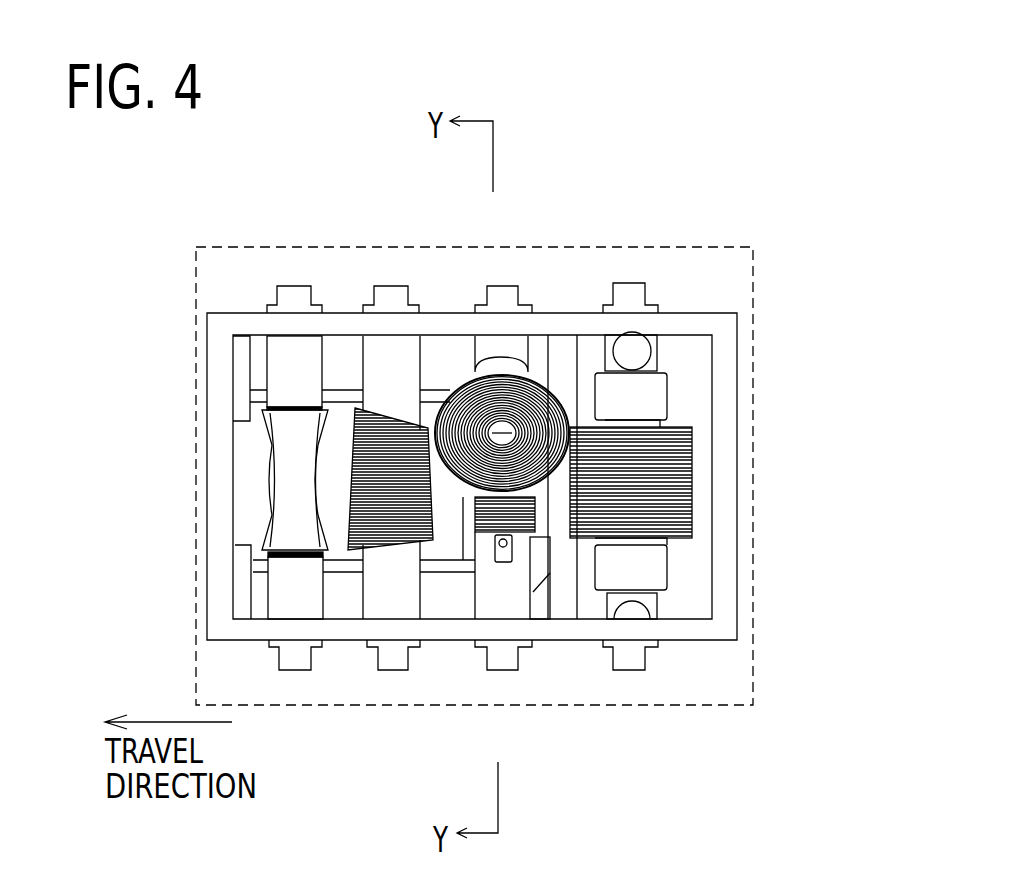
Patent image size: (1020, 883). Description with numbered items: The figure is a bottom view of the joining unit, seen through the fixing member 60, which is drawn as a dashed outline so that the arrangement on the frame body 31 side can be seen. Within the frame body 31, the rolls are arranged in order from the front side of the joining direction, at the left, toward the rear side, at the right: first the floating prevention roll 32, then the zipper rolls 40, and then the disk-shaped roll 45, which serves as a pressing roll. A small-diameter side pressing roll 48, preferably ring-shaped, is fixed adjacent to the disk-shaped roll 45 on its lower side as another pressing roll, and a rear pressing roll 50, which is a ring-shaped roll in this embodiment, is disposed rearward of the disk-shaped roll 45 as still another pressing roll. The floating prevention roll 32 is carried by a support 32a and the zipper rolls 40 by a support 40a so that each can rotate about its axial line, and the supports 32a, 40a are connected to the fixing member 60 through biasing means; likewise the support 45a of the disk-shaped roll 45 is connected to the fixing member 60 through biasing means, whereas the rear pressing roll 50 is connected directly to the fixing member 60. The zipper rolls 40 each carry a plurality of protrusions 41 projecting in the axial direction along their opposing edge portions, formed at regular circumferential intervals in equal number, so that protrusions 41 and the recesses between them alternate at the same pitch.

The frame body 31 is at (243, 327).
The floating prevention roll 32 is at (292, 440).
The support 32a is at (296, 612).
The zipper rolls 40 is at (360, 482).
The support 40a is at (400, 375).
The protrusions 41 is at (357, 481).
The disk-shaped roll 45 is at (462, 490).
The support 45a is at (520, 363).
The small-diameter side pressing roll 48 is at (533, 528).
The rear pressing roll 50 is at (700, 481).
The fixing member 60 is at (752, 249).